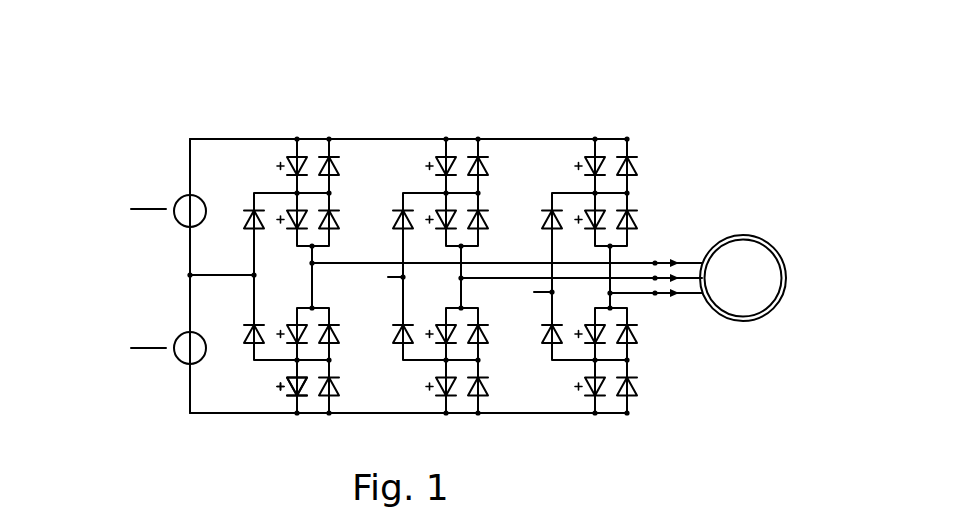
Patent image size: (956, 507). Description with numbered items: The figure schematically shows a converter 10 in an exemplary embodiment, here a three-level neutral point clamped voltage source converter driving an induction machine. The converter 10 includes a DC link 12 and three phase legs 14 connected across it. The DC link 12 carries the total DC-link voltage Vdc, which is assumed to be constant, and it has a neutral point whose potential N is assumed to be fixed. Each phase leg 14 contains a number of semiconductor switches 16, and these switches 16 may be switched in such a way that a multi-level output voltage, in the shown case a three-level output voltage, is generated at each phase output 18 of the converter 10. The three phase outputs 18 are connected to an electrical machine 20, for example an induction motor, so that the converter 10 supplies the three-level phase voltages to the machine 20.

The converter 10 is at (94, 88).
The DC link 12 is at (186, 106).
The phase leg 14 is at (301, 106).
The semiconductor switch 16 is at (282, 385).
The phase output 18 is at (670, 223).
The electrical machine 20 is at (770, 241).